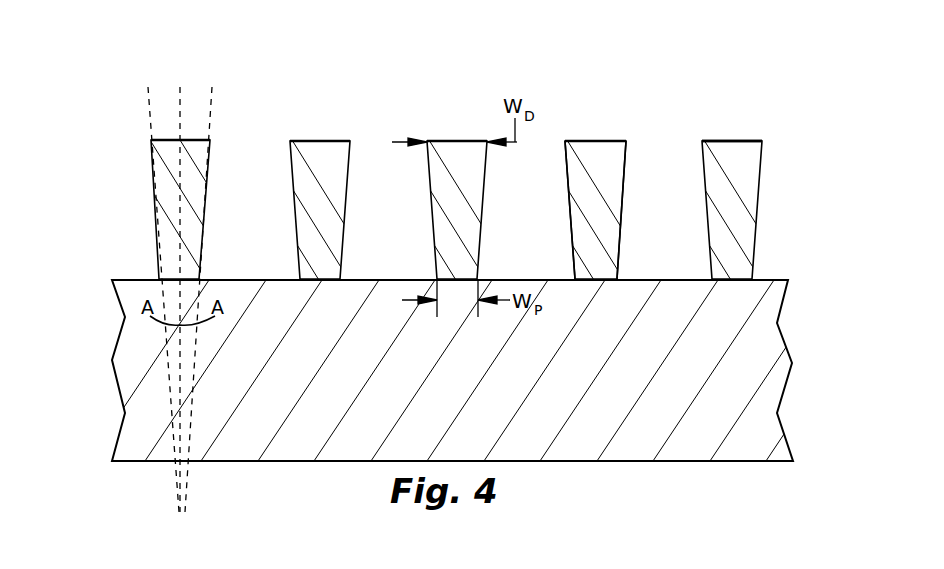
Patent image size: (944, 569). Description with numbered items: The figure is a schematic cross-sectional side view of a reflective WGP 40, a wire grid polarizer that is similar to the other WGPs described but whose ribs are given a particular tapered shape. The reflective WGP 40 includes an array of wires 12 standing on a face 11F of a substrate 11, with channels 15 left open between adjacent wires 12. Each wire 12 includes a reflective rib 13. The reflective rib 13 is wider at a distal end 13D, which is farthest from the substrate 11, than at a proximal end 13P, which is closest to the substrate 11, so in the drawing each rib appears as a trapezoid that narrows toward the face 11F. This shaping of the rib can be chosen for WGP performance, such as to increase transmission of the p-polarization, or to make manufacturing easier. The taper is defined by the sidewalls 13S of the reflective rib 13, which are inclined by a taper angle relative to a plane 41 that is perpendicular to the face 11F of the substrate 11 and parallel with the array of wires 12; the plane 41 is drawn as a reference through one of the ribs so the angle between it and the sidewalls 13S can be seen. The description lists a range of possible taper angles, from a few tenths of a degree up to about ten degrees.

The substrate 11 is at (476, 394).
The face of the substrate 11F is at (777, 274).
The wire 12 is at (76, 169).
The reflective rib 13 is at (168, 200).
The sidewalls of the reflective rib 13S is at (645, 231).
The distal end of the reflective rib 13D is at (730, 143).
The proximal end of the reflective rib 13P is at (733, 283).
The channel 15 is at (453, 172).
The reflective WGP 40 is at (74, 389).
The plane 41 is at (180, 88).